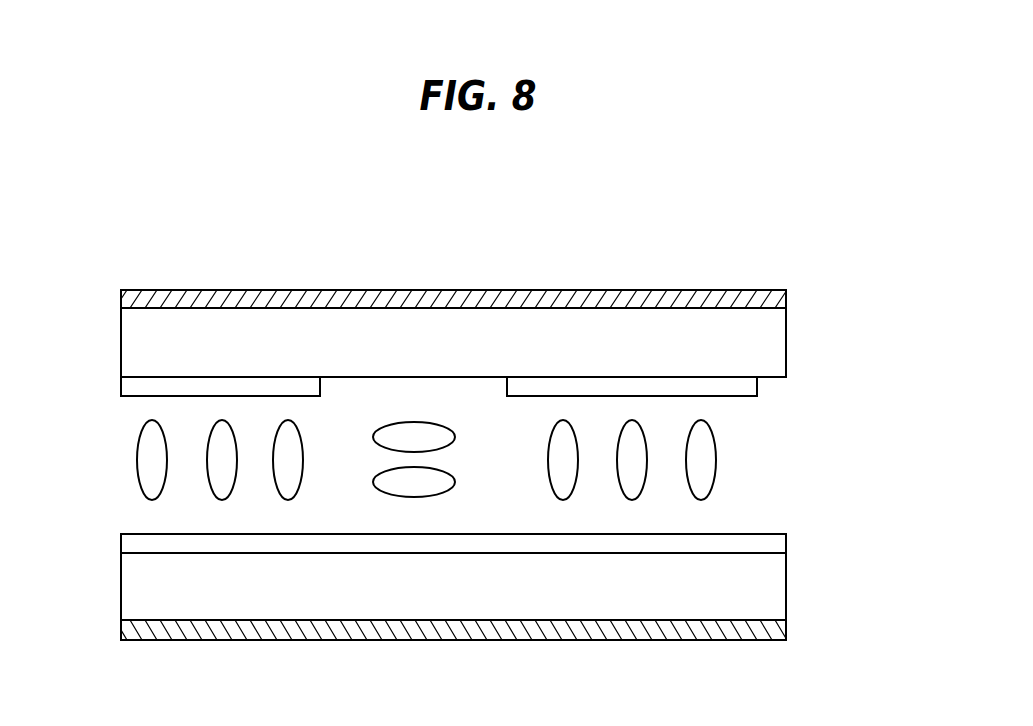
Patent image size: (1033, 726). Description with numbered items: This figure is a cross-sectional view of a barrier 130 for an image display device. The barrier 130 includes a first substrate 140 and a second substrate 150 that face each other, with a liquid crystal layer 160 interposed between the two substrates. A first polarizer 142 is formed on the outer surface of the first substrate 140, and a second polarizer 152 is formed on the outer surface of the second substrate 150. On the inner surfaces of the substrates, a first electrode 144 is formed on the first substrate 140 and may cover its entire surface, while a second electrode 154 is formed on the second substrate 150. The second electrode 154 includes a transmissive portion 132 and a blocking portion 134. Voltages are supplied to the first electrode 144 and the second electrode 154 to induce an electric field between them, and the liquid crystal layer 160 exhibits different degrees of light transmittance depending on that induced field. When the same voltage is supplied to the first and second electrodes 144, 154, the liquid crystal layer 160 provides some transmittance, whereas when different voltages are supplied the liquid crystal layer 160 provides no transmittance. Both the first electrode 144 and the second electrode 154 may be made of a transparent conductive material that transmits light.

The barrier 130 is at (509, 285).
The transmissive portion 132 is at (408, 390).
The blocking portion 134 is at (208, 385).
The first substrate 140 is at (768, 582).
The first polarizer 142 is at (777, 632).
The first electrode 144 is at (775, 538).
The second substrate 150 is at (772, 337).
The second polarizer 152 is at (785, 298).
The second electrode 154 is at (752, 385).
The liquid crystal layer 160 is at (108, 397).